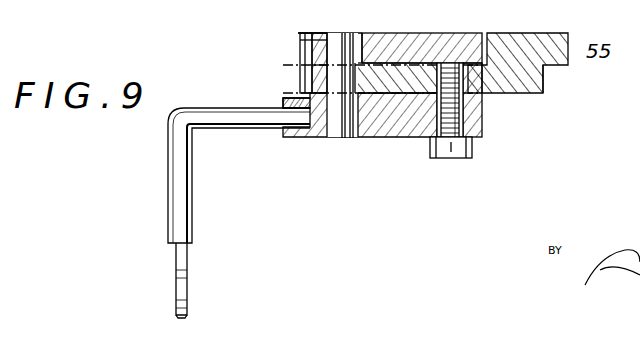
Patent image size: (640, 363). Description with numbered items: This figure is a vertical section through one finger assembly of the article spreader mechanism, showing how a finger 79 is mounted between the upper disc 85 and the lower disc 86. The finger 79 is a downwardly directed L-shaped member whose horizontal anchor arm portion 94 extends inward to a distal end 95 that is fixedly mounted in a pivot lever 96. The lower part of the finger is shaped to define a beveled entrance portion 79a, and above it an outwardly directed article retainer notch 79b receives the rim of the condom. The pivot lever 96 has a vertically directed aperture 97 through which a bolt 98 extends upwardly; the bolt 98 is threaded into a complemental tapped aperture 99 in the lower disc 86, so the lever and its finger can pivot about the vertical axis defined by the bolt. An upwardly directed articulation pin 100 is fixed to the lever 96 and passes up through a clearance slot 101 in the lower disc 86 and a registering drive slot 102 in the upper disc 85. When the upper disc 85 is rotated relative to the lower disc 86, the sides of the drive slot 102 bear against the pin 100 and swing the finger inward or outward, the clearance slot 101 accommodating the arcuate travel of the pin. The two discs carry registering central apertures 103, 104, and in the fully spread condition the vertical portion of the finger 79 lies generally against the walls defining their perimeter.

The fingers 79 is at (172, 241).
The beveled entrance portion 79a is at (187, 314).
The article retainer notches 79b is at (188, 274).
The upper disc 85 is at (465, 40).
The lower disc 86 is at (545, 91).
The anchor arm portions 94 is at (242, 108).
The distal ends 95 is at (286, 140).
The pivot levers 96 is at (387, 136).
The vertically directed apertures 97 is at (476, 113).
The bolts 98 is at (477, 160).
The tapped apertures 99 is at (472, 80).
The articulation pin 100 is at (345, 128).
The clearance slots 101 is at (311, 70).
The drive slots 102 is at (368, 33).
The central aperture 103 is at (304, 42).
The central aperture 104 is at (309, 82).